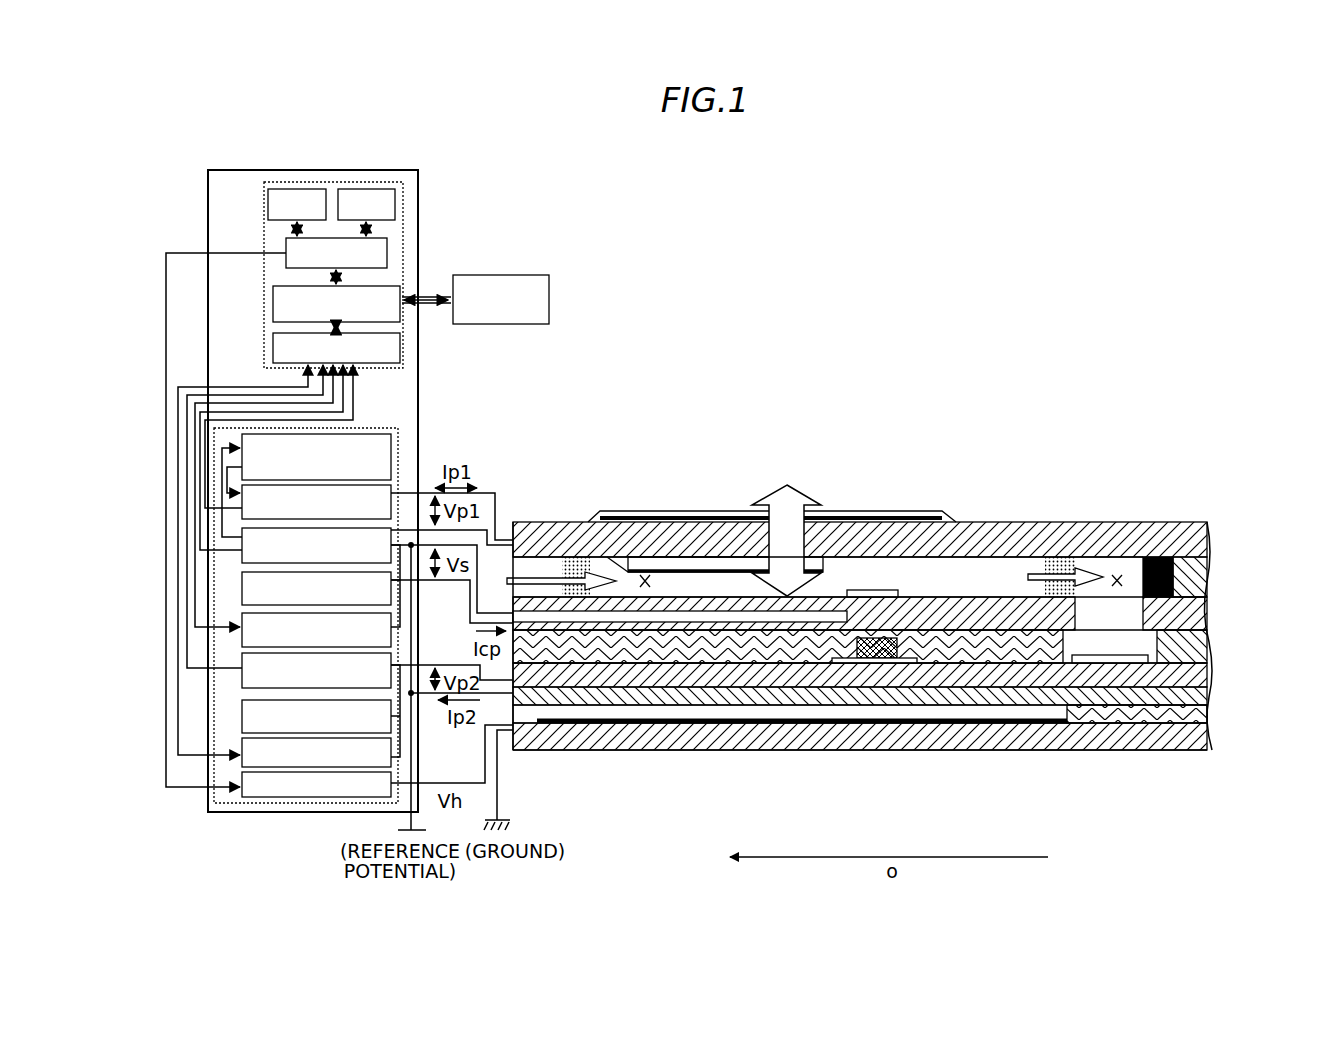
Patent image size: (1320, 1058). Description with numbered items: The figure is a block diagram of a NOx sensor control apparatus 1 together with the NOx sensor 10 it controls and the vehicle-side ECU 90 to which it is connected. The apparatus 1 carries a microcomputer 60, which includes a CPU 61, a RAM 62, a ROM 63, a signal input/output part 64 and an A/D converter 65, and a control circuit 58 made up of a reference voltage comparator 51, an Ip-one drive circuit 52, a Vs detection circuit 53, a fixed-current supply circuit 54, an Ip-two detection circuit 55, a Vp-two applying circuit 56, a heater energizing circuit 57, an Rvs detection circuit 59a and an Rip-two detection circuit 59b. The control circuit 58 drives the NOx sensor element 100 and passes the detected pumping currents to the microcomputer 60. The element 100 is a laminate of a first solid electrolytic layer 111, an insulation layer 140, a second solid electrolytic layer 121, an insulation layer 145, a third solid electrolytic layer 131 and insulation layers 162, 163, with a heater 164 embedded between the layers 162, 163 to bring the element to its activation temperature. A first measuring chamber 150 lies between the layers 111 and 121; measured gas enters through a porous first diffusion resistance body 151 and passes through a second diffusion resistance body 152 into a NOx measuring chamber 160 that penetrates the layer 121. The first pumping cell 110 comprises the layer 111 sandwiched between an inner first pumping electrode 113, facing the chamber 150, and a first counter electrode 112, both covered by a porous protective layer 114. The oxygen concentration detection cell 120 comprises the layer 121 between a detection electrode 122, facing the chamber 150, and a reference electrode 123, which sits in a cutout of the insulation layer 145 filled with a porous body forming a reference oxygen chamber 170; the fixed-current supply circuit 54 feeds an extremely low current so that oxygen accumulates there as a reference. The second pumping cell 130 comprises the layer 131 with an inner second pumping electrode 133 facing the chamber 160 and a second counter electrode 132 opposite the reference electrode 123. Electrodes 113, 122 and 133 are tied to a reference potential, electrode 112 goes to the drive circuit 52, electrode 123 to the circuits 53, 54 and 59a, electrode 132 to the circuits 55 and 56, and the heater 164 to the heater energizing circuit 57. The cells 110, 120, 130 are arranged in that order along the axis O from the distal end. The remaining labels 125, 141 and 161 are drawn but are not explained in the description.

The NOx sensor control apparatus 1 is at (335, 170).
The NOx sensor 10 is at (905, 555).
The reference voltage comparator 51 is at (393, 452).
The Ip1 drive circuit 52 is at (393, 490).
The Vs detection circuit 53 is at (400, 540).
The Icp supply circuit 54 is at (396, 600).
The Ip2 detection circuit 55 is at (396, 662).
The Vp2 applying circuit 56 is at (396, 728).
The heater energizing circuit 57 is at (273, 803).
The control circuit 58 is at (398, 430).
The Rvs detection circuit 59a is at (400, 640).
The Rip2 detection circuit 59b is at (396, 752).
The microcomputer 60 is at (403, 196).
The CPU 61 is at (387, 240).
The RAM 62 is at (368, 184).
The ROM 63 is at (300, 184).
The signal input/output part 64 is at (400, 288).
The A/D converter 65 is at (400, 348).
The ECU 90 is at (497, 274).
The NOx sensor element 100 is at (905, 555).
The first pumping cell 110 is at (883, 477).
The first solid electrolytic layer 111 is at (745, 520).
The first counter electrode 112 is at (708, 518).
The inner first pumping electrode 113 is at (672, 520).
The protective layer 114 is at (614, 558).
The oxygen concentration detection cell 120 is at (883, 514).
The second solid electrolytic layer 121 is at (952, 600).
The detection electrode 122 is at (860, 612).
The reference electrode 123 is at (868, 590).
The reference gas chamber 125 is at (1136, 608).
The second pumping cell 130 is at (860, 744).
The third solid electrolytic layer 131 is at (1185, 680).
The second counter electrode 132 is at (965, 695).
The inner second pumping electrode 133 is at (1022, 690).
The insulation layer 140 is at (1178, 577).
The insulating layer 141 is at (1168, 550).
The insulation layer 145 is at (1185, 646).
The first measuring chamber 150 is at (645, 590).
The first diffusion resistance body 151 is at (571, 558).
The second diffusion resistance body 152 is at (1052, 560).
The NOx measuring chamber 160 is at (1112, 556).
The heater unit 161 is at (908, 725).
The insulation layer 162 is at (1185, 716).
The insulation layer 163 is at (1185, 735).
The heater 164 is at (885, 660).
The reference oxygen chamber 170 is at (838, 665).